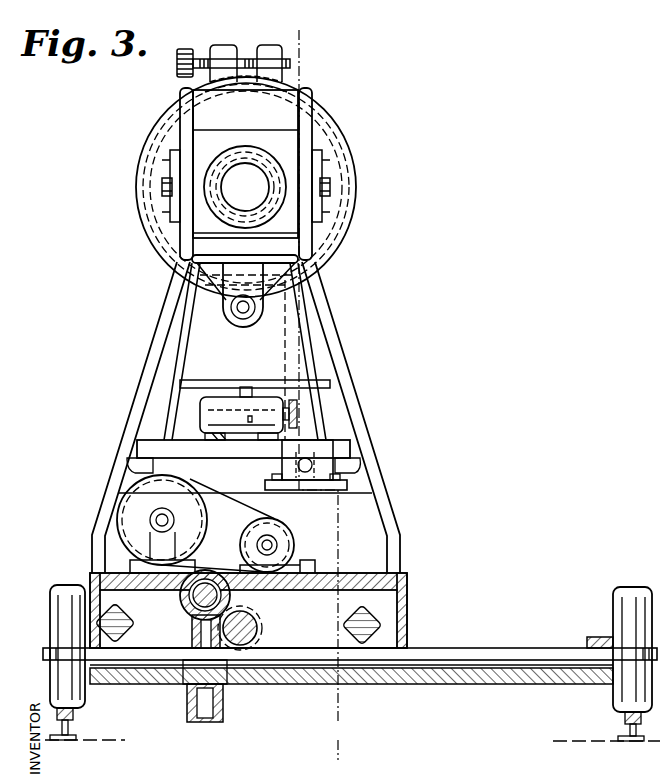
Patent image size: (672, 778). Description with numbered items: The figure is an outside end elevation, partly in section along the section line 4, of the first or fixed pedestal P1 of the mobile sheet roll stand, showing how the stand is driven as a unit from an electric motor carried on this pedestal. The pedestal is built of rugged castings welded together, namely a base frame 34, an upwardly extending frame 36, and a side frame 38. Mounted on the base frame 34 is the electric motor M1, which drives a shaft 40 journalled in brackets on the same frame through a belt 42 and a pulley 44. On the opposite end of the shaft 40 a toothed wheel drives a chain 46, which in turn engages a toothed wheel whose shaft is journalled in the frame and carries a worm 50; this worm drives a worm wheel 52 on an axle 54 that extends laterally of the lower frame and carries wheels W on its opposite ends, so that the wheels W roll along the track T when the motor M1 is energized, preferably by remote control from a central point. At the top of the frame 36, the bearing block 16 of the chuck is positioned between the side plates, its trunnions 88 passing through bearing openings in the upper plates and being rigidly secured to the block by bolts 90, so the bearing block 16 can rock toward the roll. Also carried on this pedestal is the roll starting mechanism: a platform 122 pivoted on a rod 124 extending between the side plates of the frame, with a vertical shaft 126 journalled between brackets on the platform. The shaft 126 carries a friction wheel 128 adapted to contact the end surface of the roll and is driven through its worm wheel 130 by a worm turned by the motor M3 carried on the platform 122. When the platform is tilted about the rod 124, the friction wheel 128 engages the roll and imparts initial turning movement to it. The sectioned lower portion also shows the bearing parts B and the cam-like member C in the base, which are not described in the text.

The section line 4 is at (266, 23).
The bearing block 16 is at (275, 143).
The trunnions 88 is at (168, 157).
The bolts 90 is at (165, 186).
The rod 124 is at (290, 300).
The vertical shaft 126 is at (245, 395).
The upwardly extending frame 36 is at (357, 400).
The first or fixed pedestal P1 is at (135, 330).
The platform 122 is at (166, 422).
The friction wheel 128 is at (140, 445).
The worm wheel 130 is at (236, 432).
The motor M3 is at (222, 402).
The pulley 44 is at (130, 512).
The shaft 40 is at (156, 524).
The chain 46 is at (205, 556).
The belt 42 is at (258, 526).
The electric motor M1 is at (320, 578).
The base frame 34 is at (394, 570).
The bearing block B is at (103, 623).
The worm 50 is at (195, 600).
The cam C is at (258, 626).
The side frame 38 is at (488, 673).
The axle 54 is at (288, 655).
The worm wheel 52 is at (195, 712).
The wheels W is at (65, 684).
The track T is at (63, 727).